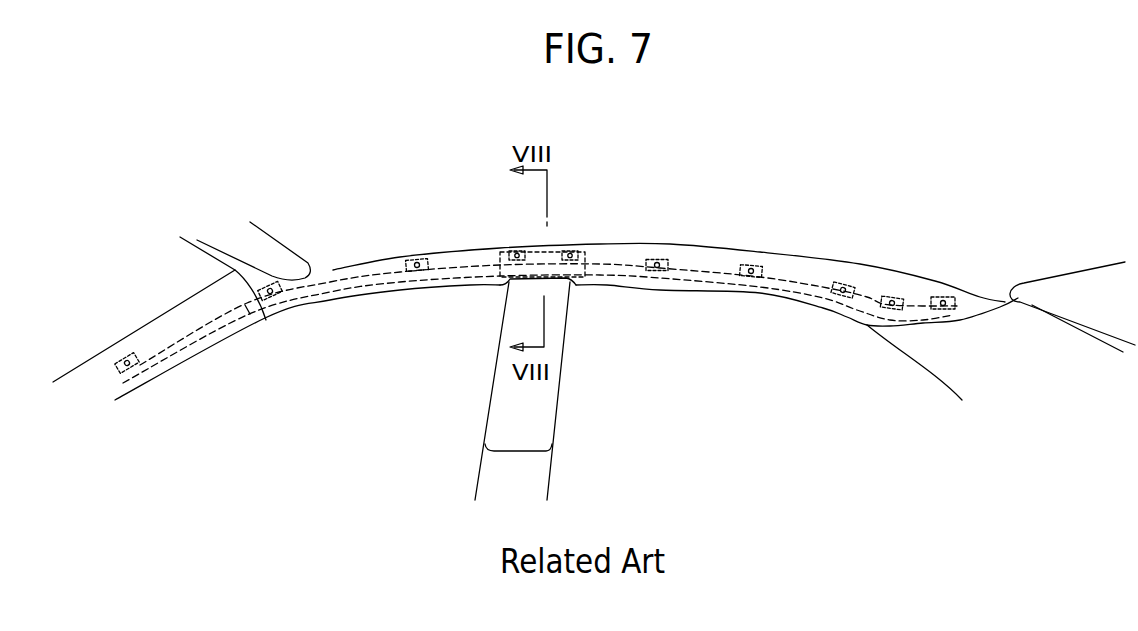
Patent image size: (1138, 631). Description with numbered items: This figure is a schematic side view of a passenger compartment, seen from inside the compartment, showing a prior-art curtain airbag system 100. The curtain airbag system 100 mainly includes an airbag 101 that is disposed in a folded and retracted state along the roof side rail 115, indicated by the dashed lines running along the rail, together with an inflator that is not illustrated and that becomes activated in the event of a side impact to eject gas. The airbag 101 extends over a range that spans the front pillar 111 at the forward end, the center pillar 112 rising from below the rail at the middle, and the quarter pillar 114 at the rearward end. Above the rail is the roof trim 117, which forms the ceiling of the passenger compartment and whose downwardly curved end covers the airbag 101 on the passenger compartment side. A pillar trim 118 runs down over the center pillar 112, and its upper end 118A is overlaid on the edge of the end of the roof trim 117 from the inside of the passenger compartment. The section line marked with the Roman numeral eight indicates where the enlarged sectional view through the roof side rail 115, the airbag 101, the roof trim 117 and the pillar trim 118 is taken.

The curtain airbag system 100 is at (800, 268).
The airbag 101 is at (695, 273).
The front pillar 111 is at (125, 345).
The center pillar 112 is at (537, 477).
The quarter pillar 114 is at (955, 375).
The roof side rail 115 is at (420, 285).
The roof trim 117 is at (622, 228).
The pillar trim 118 is at (545, 417).
The upper end of pillar trim 118A is at (547, 283).